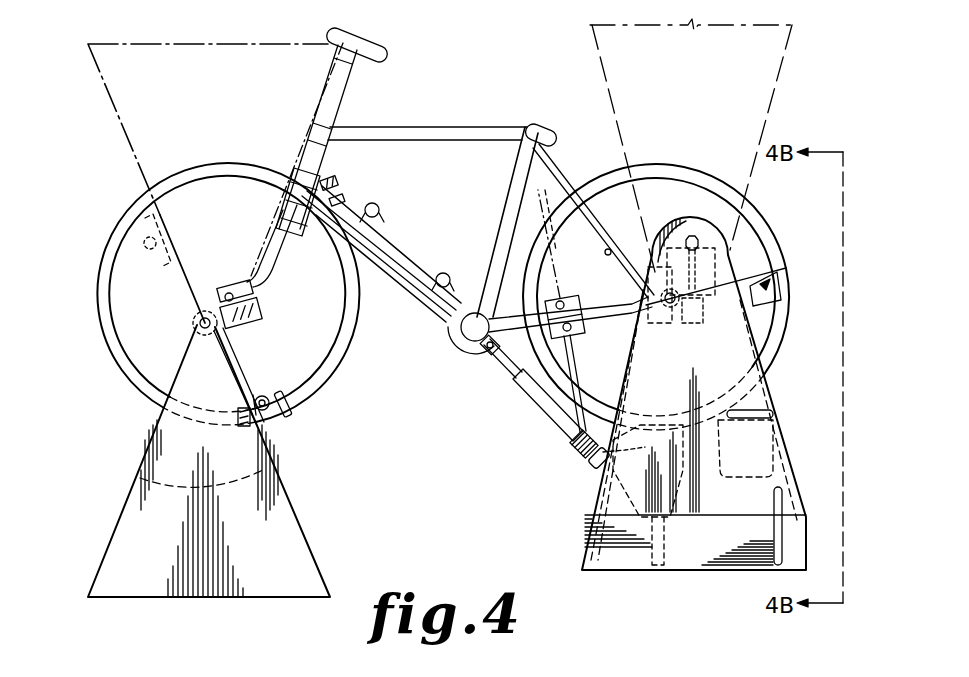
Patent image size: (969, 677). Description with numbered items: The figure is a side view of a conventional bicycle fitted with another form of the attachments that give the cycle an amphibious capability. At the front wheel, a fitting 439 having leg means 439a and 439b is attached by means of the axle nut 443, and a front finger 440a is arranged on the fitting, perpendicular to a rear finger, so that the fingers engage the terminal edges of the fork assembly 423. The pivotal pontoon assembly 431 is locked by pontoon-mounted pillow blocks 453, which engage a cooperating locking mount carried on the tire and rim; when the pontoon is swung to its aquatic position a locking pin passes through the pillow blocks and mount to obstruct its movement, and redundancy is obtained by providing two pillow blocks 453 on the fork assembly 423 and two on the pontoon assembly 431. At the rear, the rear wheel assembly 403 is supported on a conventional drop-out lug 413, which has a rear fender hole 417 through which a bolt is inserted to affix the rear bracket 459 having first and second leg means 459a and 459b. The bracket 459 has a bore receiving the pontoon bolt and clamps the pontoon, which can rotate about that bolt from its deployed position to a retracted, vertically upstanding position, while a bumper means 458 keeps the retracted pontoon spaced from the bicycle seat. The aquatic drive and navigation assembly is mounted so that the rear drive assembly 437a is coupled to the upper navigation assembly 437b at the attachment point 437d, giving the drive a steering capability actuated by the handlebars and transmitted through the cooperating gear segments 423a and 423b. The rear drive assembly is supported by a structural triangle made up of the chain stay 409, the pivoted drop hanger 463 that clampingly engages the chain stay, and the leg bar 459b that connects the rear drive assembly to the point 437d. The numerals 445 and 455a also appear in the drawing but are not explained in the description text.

The fork assembly 423 is at (309, 141).
The gear segment 423a is at (320, 178).
The gear segment 423b is at (335, 198).
The leg means 439b is at (146, 192).
The pillow block 453 is at (143, 240).
The front finger 440a is at (229, 284).
The axle nut 443 is at (221, 297).
The front wheel axle 445 is at (199, 323).
The fitting 439 is at (248, 322).
The leg means 439a is at (235, 345).
The pontoon assembly 431 is at (165, 553).
The chain stay 409 is at (495, 275).
The control rod 455a is at (333, 250).
The upper navigation assembly 437b is at (450, 338).
The pivoted drop hanger 463 is at (575, 335).
The attachment point 437d is at (492, 366).
The leg means 459b is at (509, 385).
The rear drive assembly 437a is at (592, 460).
The bumper means 458 is at (640, 220).
The rear bracket 459 is at (672, 278).
The leg means 459a is at (768, 276).
The rear wheel assembly 403 is at (776, 330).
The drop-out lug 413 is at (662, 310).
The rear fender hole 417 is at (690, 322).